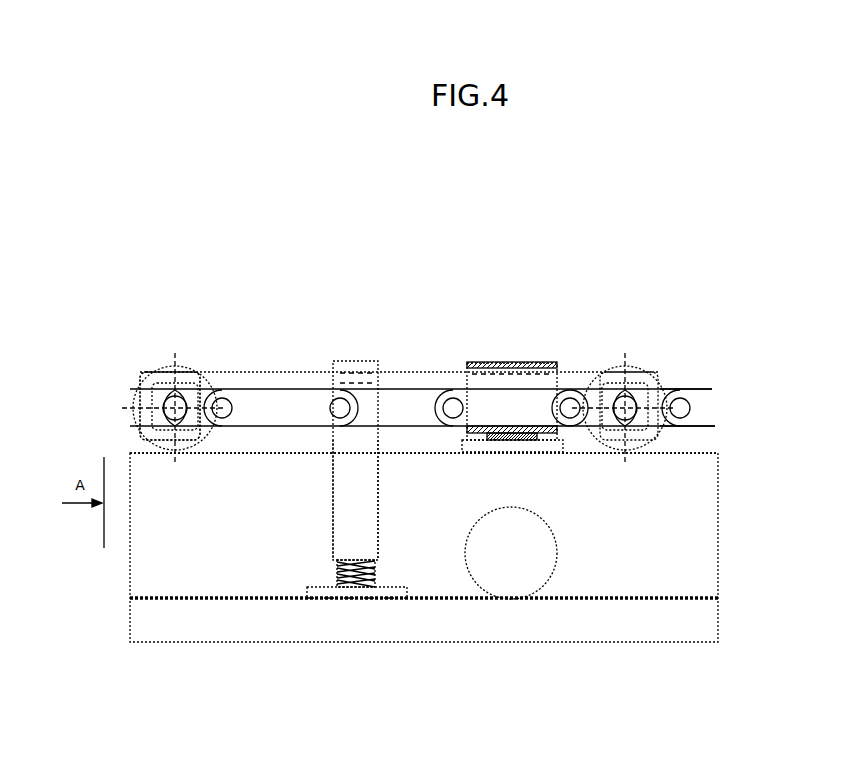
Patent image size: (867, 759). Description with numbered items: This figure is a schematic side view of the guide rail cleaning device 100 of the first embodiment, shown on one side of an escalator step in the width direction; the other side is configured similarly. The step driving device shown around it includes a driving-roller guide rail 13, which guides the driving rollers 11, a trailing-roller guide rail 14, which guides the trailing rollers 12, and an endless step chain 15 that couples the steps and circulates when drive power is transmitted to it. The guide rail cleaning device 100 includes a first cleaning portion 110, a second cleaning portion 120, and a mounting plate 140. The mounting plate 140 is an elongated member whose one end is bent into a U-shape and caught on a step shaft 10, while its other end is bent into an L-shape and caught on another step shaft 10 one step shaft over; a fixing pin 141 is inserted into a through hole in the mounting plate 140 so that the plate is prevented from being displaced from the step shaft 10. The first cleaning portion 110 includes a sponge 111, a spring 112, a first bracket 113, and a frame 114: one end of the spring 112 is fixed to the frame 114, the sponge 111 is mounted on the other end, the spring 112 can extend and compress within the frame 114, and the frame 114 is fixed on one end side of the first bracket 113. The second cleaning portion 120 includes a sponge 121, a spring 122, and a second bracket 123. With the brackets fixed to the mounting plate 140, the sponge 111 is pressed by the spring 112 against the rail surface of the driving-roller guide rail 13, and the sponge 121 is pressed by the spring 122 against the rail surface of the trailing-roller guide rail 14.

The guide rail cleaning device 100 is at (405, 242).
The first cleaning portion 110 is at (503, 337).
The second cleaning portion 120 is at (363, 622).
The step shaft 10 is at (198, 388).
The driving roller 11 is at (150, 367).
The trailing roller 12 is at (547, 580).
The driving-roller guide rail 13 is at (683, 452).
The trailing-roller guide rail 14 is at (680, 597).
The step chain 15 is at (710, 388).
The sponge 111 is at (535, 447).
The spring 112 is at (530, 440).
The first bracket 113 is at (543, 427).
The frame 114 is at (542, 363).
The sponge 121 is at (307, 593).
The spring 122 is at (338, 578).
The second bracket 123 is at (378, 527).
The mounting plate 140 is at (302, 371).
The fixing pin 141 is at (212, 378).